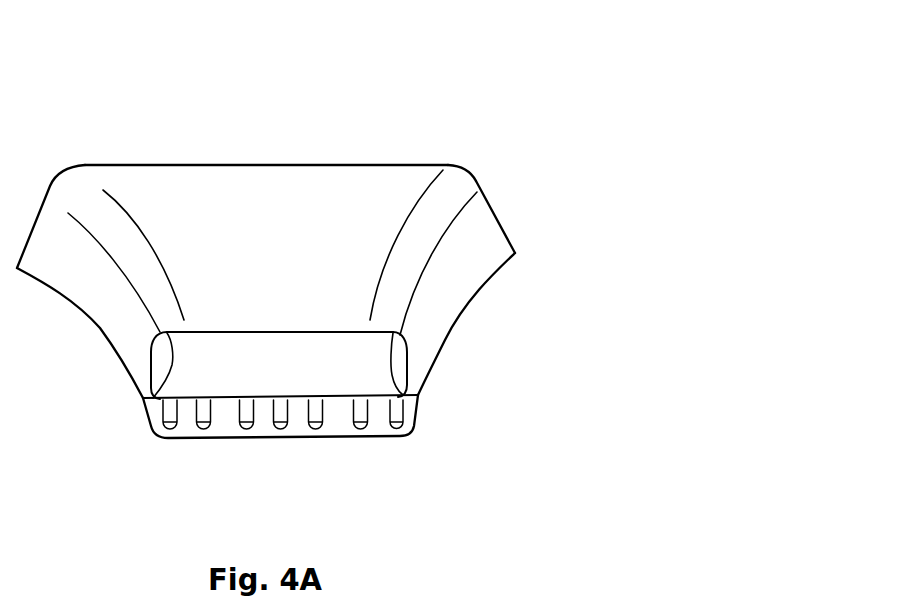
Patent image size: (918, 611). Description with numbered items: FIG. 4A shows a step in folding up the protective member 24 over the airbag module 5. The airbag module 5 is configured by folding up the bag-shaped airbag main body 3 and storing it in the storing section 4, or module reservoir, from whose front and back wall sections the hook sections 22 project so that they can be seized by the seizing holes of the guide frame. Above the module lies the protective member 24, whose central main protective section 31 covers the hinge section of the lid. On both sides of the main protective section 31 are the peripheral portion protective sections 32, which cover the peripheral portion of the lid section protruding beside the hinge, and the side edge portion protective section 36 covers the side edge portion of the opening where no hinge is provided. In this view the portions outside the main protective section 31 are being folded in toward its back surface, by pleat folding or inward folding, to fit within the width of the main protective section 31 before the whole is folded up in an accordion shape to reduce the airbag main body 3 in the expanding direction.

The protective member 24 is at (273, 134).
The main protective section 31 is at (354, 165).
The peripheral portion protective section 32 is at (448, 165).
The side edge portion protective section 36 is at (500, 219).
The airbag module 5 is at (480, 362).
The airbag main body 3 is at (381, 370).
The hook sections 22 is at (247, 429).
The storing section 4 is at (365, 437).